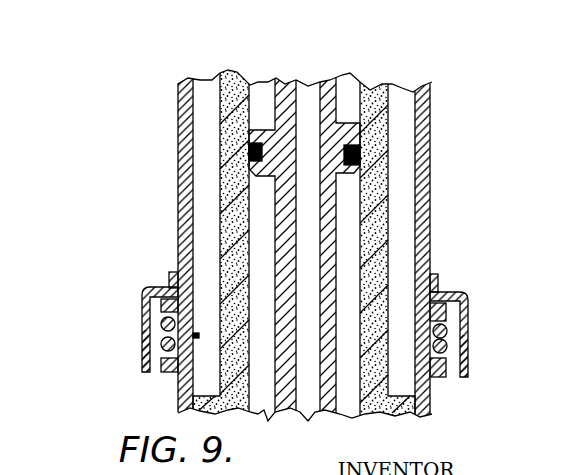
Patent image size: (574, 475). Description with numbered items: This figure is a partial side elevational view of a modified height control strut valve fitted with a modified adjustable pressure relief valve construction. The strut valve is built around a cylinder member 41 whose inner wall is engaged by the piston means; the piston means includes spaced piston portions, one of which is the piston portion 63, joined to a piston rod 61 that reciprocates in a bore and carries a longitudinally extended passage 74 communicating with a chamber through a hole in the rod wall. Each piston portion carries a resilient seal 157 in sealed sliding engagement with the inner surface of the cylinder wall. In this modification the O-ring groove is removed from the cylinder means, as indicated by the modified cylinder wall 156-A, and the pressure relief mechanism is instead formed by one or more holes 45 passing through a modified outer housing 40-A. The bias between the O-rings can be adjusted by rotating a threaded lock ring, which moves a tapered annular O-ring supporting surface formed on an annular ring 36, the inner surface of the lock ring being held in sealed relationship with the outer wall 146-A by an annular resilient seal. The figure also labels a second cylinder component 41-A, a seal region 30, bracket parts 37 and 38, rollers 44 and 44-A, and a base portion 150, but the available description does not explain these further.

The cylinder member 41 is at (181, 219).
The modified outer housing 40-A is at (167, 137).
The piston portion 63 is at (272, 95).
The piston rod 61 is at (189, 220).
The resilient seal 157 is at (253, 148).
The longitudinally extended passage 74 is at (275, 220).
The second panel 41-A is at (431, 234).
The outer wall 146-A is at (423, 224).
The modified cylinder wall 156-A is at (394, 127).
The seal 30 is at (380, 174).
The holes 45 is at (193, 334).
The bracket 37 is at (143, 305).
The bracket leg 38 is at (147, 368).
The roller 44 is at (160, 325).
The roller 44-A is at (162, 356).
The annular ring 36 is at (168, 375).
The base 150 is at (183, 411).